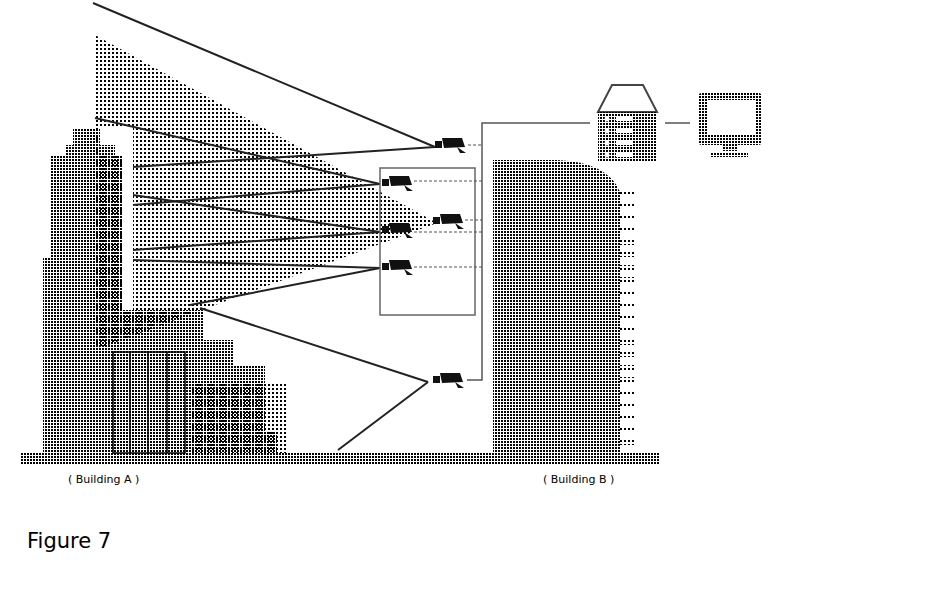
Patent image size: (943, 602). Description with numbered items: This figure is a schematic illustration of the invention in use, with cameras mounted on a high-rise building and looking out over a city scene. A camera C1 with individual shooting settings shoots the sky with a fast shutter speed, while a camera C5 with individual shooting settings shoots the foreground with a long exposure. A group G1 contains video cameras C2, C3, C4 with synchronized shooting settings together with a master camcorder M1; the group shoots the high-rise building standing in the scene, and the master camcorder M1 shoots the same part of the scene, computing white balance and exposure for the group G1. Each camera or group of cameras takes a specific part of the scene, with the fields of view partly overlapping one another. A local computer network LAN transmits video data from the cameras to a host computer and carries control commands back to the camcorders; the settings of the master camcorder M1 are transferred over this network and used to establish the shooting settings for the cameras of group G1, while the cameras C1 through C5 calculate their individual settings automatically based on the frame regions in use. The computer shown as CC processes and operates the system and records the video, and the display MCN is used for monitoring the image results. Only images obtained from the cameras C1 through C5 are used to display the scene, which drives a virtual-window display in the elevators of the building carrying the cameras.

The camera C1 is at (452, 152).
The video camera C2 is at (397, 191).
The video camera C3 is at (397, 237).
The video camera C4 is at (397, 276).
The camera C5 is at (448, 388).
The master camcorder M1 is at (449, 229).
The group of cameras G1 is at (427, 248).
The local computer network LAN is at (552, 251).
The control center server CC is at (627, 132).
The monitor MCN is at (730, 134).